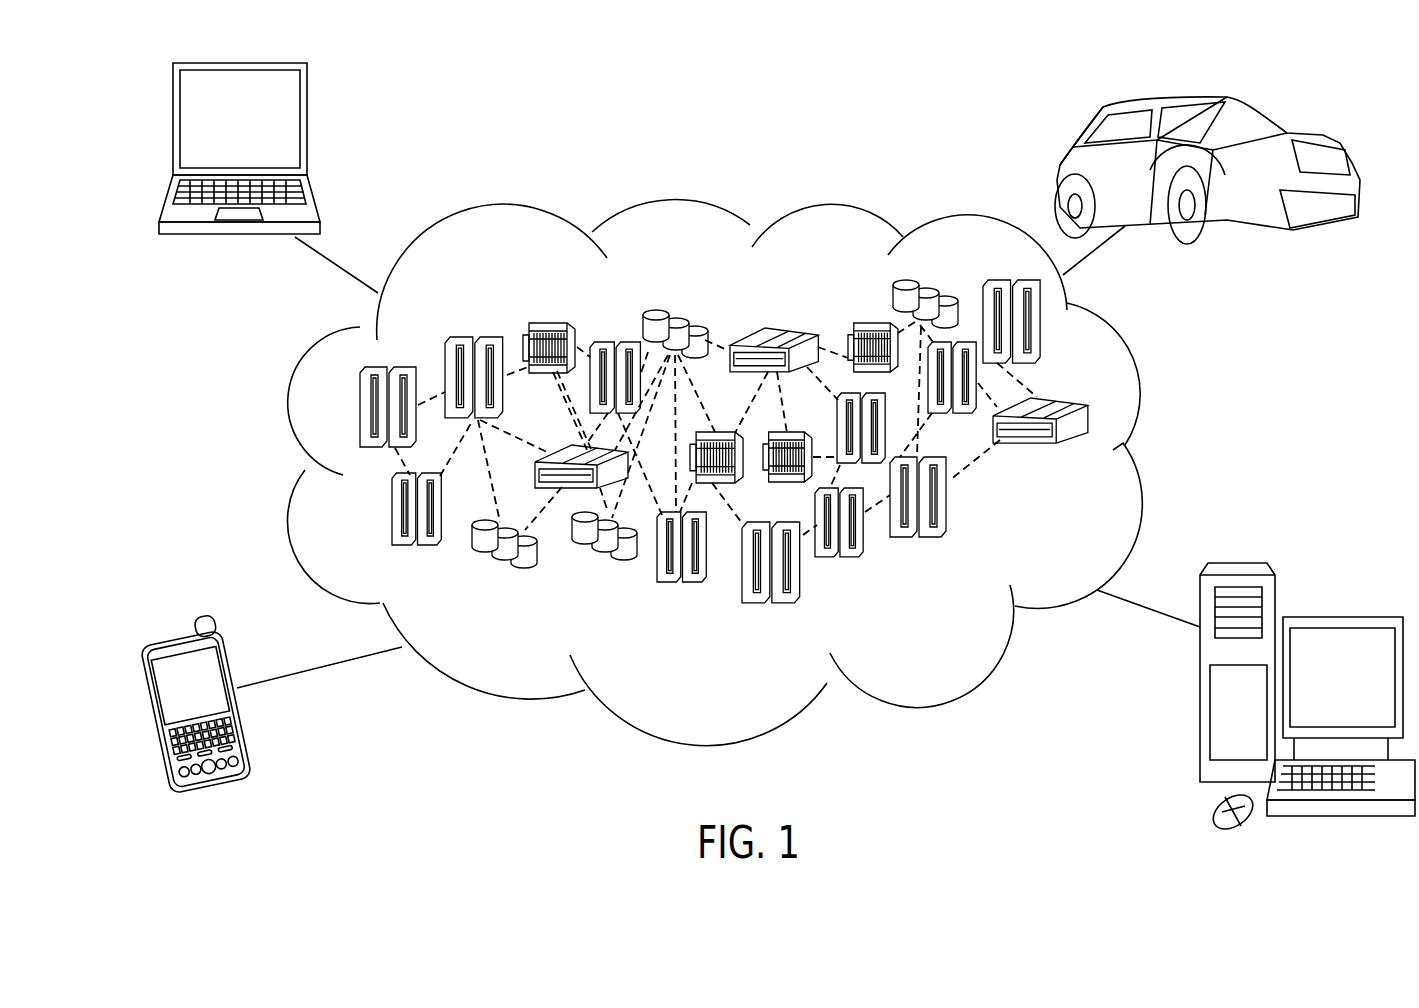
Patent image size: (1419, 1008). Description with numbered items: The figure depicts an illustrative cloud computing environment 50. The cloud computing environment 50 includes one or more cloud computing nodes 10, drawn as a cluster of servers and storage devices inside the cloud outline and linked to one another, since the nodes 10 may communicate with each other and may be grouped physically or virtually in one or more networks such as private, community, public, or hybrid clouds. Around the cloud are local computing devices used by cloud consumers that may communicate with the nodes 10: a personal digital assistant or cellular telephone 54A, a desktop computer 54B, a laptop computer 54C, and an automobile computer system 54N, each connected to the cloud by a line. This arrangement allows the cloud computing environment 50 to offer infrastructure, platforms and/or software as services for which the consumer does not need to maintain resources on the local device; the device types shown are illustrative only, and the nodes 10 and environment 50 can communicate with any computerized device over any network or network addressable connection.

The cloud computing nodes 10 is at (1127, 467).
The cloud computing environment 50 is at (1140, 392).
The personal digital assistant (PDA) or cellular telephone 54A is at (148, 718).
The desktop computer 54B is at (1318, 617).
The laptop computer 54C is at (172, 123).
The automobile computer system 54N is at (1266, 120).